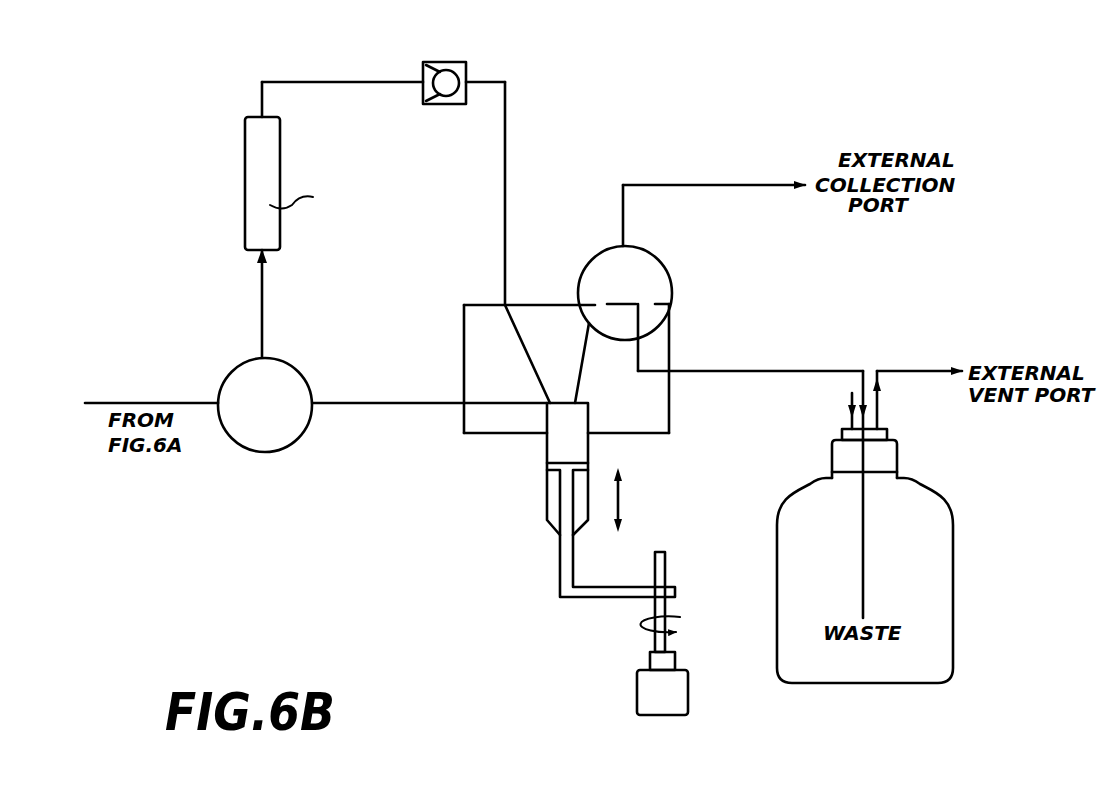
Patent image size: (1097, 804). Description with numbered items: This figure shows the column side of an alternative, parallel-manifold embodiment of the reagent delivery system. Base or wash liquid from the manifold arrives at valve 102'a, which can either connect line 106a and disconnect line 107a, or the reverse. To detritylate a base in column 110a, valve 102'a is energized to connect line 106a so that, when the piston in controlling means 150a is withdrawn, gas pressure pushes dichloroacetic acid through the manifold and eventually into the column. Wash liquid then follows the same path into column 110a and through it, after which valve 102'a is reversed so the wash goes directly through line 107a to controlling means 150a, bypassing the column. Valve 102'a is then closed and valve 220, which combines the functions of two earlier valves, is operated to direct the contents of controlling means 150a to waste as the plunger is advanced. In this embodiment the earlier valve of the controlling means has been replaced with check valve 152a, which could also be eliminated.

The valve 102'a is at (274, 430).
The line 106a is at (264, 326).
The line 107a is at (336, 403).
The column 110a is at (281, 160).
The check valve 152a is at (468, 70).
The controlling means 150a is at (534, 445).
The valve 220 is at (673, 290).